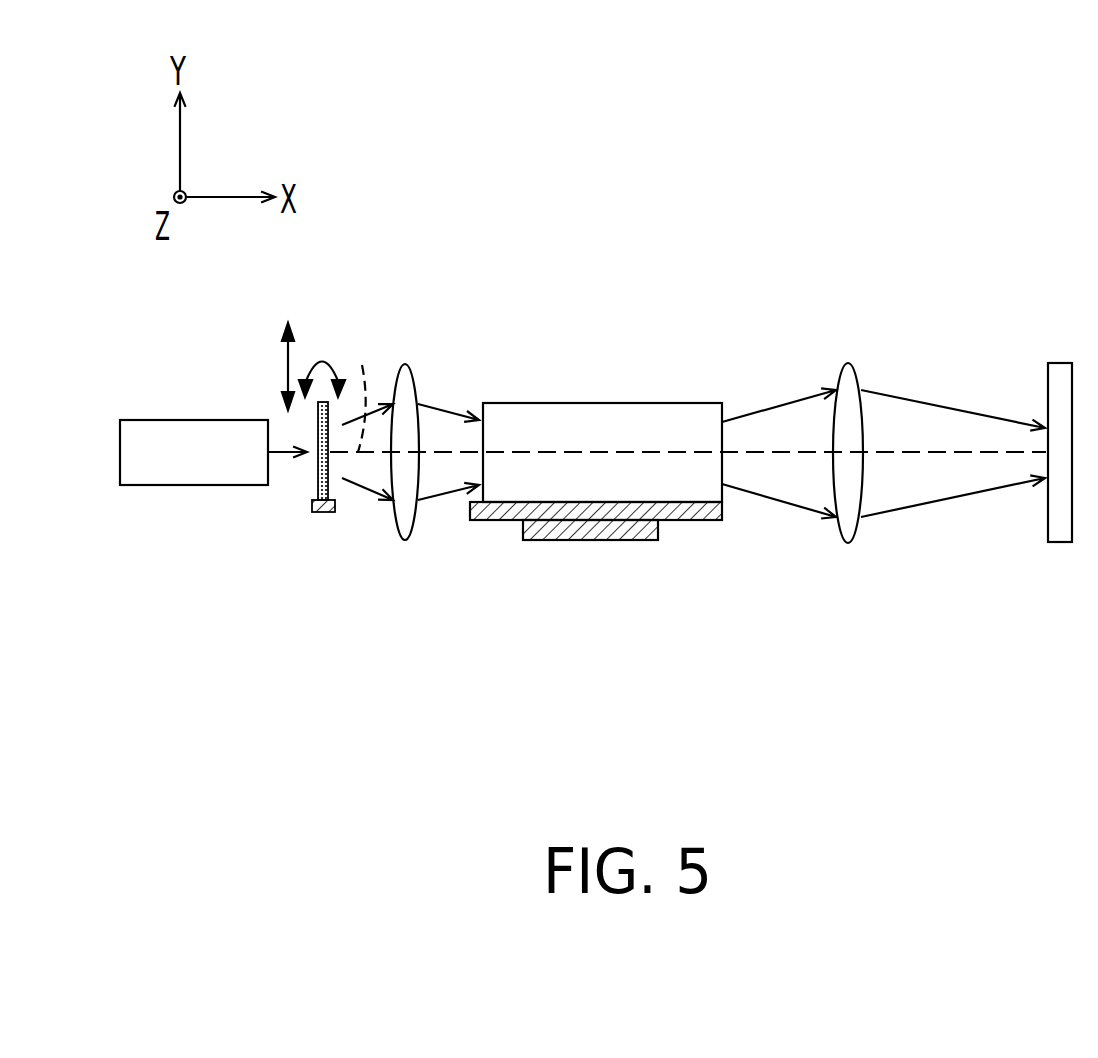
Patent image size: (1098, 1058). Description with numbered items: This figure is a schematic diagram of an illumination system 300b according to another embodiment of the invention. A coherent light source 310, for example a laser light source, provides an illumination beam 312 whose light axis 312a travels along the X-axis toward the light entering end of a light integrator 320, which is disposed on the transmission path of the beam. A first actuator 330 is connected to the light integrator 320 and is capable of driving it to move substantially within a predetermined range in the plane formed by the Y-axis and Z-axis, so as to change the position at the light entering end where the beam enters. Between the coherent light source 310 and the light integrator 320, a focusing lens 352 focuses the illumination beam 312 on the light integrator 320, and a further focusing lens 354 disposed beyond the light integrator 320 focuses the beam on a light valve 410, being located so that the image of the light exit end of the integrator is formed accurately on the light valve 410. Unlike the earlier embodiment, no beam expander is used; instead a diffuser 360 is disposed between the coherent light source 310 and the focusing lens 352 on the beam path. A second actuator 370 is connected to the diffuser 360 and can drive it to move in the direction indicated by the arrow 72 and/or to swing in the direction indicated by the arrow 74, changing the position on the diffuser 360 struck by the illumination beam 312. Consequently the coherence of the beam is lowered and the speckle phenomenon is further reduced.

The coherent light source 310 is at (220, 486).
The illumination beam 312 is at (283, 445).
The light axis 312a is at (369, 388).
The arrow 72 is at (283, 378).
The arrow 74 is at (321, 358).
The diffuser 360 is at (312, 490).
The second actuator 370 is at (330, 512).
The focusing lens 352 is at (405, 540).
The light integrator 320 is at (571, 487).
The first actuator 330 is at (700, 508).
The focusing lens 354 is at (848, 543).
The light valve 410 is at (1058, 542).
The illumination system 300b is at (835, 662).